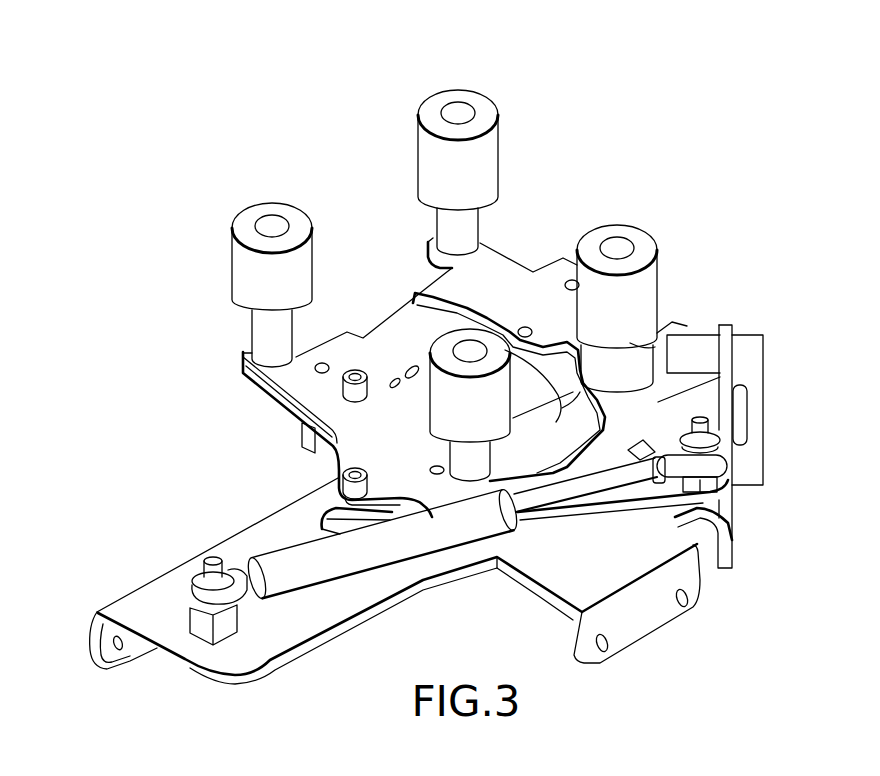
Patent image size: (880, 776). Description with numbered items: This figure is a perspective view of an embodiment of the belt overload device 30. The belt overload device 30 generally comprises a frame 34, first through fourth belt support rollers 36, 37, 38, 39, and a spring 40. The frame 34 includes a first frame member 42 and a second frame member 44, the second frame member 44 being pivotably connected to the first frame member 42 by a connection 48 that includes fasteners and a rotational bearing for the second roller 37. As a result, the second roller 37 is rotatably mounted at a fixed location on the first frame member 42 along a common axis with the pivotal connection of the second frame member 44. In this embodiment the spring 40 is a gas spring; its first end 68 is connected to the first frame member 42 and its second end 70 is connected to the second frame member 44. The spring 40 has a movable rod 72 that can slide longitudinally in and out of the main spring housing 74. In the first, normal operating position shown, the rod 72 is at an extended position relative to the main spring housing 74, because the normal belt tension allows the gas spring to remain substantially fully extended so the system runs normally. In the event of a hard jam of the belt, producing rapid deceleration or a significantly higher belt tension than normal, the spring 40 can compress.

The belt overload device 30 is at (258, 118).
The frame 34 is at (85, 605).
The first belt support roller 36 is at (410, 302).
The second belt support roller 37 is at (633, 237).
The third belt support roller 38 is at (233, 252).
The fourth belt support roller 39 is at (488, 107).
The spring 40 is at (413, 540).
The first frame member 42 is at (307, 657).
The second frame member 44 is at (695, 412).
The connection 48 is at (616, 245).
The first end 68 is at (193, 587).
The second end 70 is at (730, 490).
The movable rod 72 is at (618, 482).
The main spring housing 74 is at (353, 557).